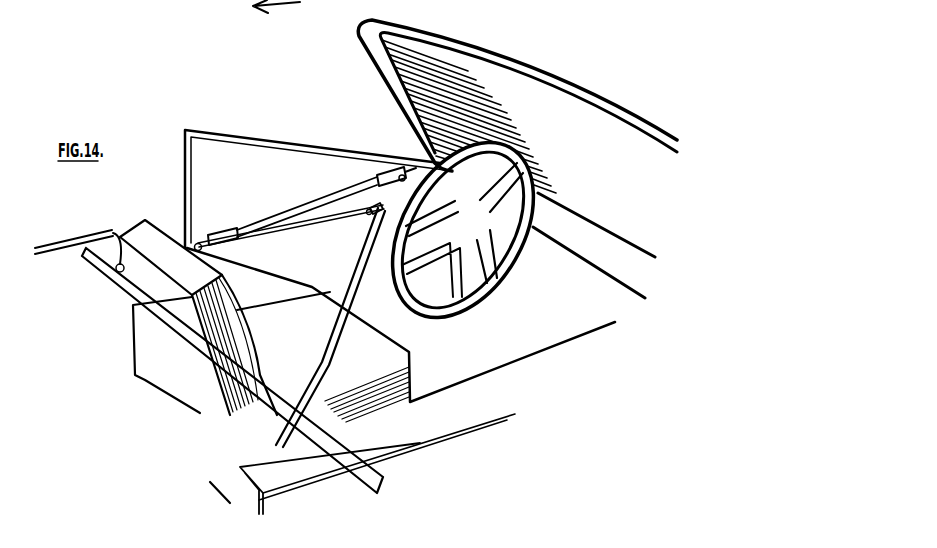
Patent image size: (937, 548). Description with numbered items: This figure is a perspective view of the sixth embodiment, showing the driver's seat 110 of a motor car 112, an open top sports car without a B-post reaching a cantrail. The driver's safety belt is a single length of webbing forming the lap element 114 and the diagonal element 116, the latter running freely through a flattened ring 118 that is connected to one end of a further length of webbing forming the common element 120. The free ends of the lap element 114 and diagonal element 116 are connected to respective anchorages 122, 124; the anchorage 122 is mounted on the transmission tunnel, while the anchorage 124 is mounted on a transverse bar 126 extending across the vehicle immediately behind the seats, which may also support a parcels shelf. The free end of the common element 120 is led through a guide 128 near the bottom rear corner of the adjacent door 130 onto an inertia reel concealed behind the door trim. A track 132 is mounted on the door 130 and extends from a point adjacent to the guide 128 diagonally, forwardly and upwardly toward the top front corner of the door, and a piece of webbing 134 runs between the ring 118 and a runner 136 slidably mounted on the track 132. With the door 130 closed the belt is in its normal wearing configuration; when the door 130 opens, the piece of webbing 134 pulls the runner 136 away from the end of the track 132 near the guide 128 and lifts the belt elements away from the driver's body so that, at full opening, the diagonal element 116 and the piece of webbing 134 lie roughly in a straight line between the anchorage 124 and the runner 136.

The driver's seat 110 is at (384, 356).
The motor car 112 is at (545, 60).
The lap element 114 is at (338, 322).
The diagonal element 116 is at (264, 230).
The flattened ring 118 is at (366, 215).
The common element 120 is at (226, 228).
The anchorage 122 is at (243, 448).
The anchorage 124 is at (115, 270).
The transverse bar 126 is at (345, 452).
The guide 128 is at (196, 243).
The door 130 is at (203, 145).
The track 132 is at (258, 217).
The piece of webbing 134 is at (372, 178).
The runner 136 is at (400, 175).